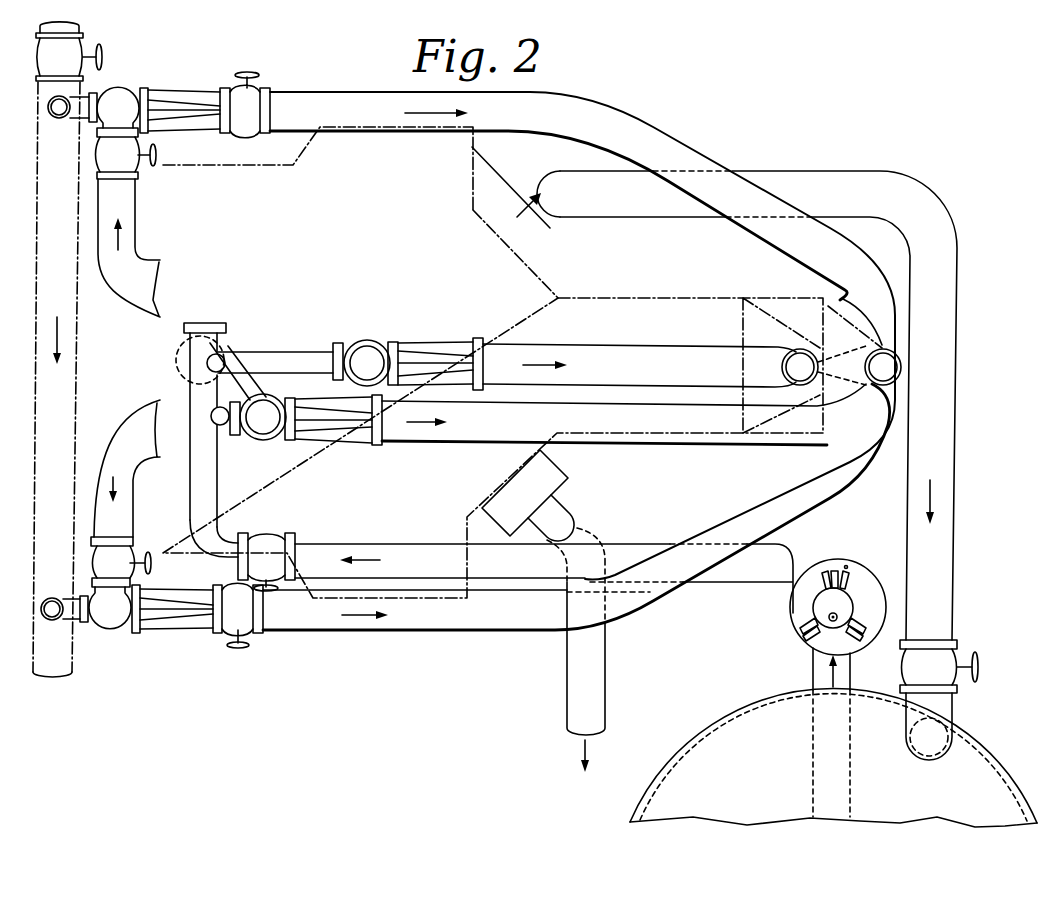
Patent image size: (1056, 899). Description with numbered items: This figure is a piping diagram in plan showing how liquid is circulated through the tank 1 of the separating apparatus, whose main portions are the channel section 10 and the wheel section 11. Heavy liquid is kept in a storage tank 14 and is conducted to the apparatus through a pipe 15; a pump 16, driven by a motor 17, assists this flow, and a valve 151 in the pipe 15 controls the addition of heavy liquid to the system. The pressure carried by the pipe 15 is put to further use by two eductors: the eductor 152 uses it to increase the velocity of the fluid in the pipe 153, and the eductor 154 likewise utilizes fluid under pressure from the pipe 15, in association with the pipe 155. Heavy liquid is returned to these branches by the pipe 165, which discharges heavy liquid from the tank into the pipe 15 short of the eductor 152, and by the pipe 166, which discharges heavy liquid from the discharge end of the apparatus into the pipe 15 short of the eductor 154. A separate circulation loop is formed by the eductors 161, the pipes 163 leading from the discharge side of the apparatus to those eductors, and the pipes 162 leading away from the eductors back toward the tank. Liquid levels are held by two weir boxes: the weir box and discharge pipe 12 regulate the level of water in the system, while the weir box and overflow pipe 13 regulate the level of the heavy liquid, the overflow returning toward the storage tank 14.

The tank 1 is at (547, 282).
The channel section of the tank 10 is at (623, 297).
The wheel section of the tank 11 is at (160, 363).
The weir box and discharge pipe 12 is at (568, 480).
The weir box and overflow pipe 13 is at (558, 234).
The storage tank for heavy liquid 14 is at (993, 767).
The pipe for conducting heavy liquid 15 is at (759, 575).
The pump 16 is at (793, 613).
The motor 17 is at (848, 597).
The valve 151 is at (267, 543).
The eductor 152 is at (453, 350).
The pipe 153 is at (577, 352).
The eductor 154 is at (327, 442).
The pipe 155 is at (445, 432).
The eductors 161 is at (197, 90).
The pipes leading from the eductors 162 is at (670, 135).
The pipes leading from the discharge side of the apparatus to the eductors 163 is at (133, 293).
The pipe discharging heavy liquid from the tank 165 is at (363, 338).
The pipe discharging heavy liquid from the discharge end of the apparatus 166 is at (263, 440).